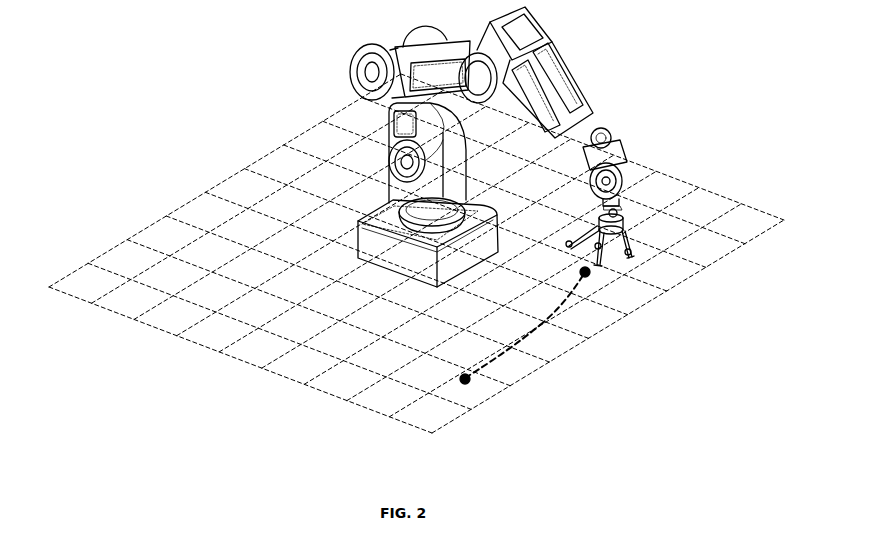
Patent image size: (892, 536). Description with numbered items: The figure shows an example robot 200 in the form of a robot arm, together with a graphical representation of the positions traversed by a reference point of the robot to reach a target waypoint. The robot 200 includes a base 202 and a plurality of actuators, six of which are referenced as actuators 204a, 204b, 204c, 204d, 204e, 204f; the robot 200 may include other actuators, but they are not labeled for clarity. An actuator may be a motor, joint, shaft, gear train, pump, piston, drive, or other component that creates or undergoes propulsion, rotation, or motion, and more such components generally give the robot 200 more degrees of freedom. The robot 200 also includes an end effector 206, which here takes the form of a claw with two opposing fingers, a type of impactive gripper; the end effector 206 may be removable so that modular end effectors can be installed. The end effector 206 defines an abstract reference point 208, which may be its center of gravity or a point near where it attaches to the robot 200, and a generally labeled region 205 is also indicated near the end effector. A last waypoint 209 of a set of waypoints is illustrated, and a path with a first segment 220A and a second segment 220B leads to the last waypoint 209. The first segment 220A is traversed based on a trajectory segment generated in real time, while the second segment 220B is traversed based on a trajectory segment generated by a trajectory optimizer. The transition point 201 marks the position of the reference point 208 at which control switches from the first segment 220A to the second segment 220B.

The robot 200 is at (327, 53).
The transition point 201 is at (588, 278).
The base 202 is at (397, 260).
The actuator 204a is at (617, 212).
The actuator 204b is at (605, 181).
The actuator 204c is at (603, 139).
The actuator 204d is at (471, 76).
The actuator 204e is at (413, 160).
The actuator 204f is at (410, 218).
The end effector 205 is at (620, 212).
The end effector 206 is at (623, 228).
The reference point 208 is at (613, 237).
The last waypoint 209 is at (465, 383).
The first segment 220A is at (598, 267).
The second segment 220B is at (512, 350).